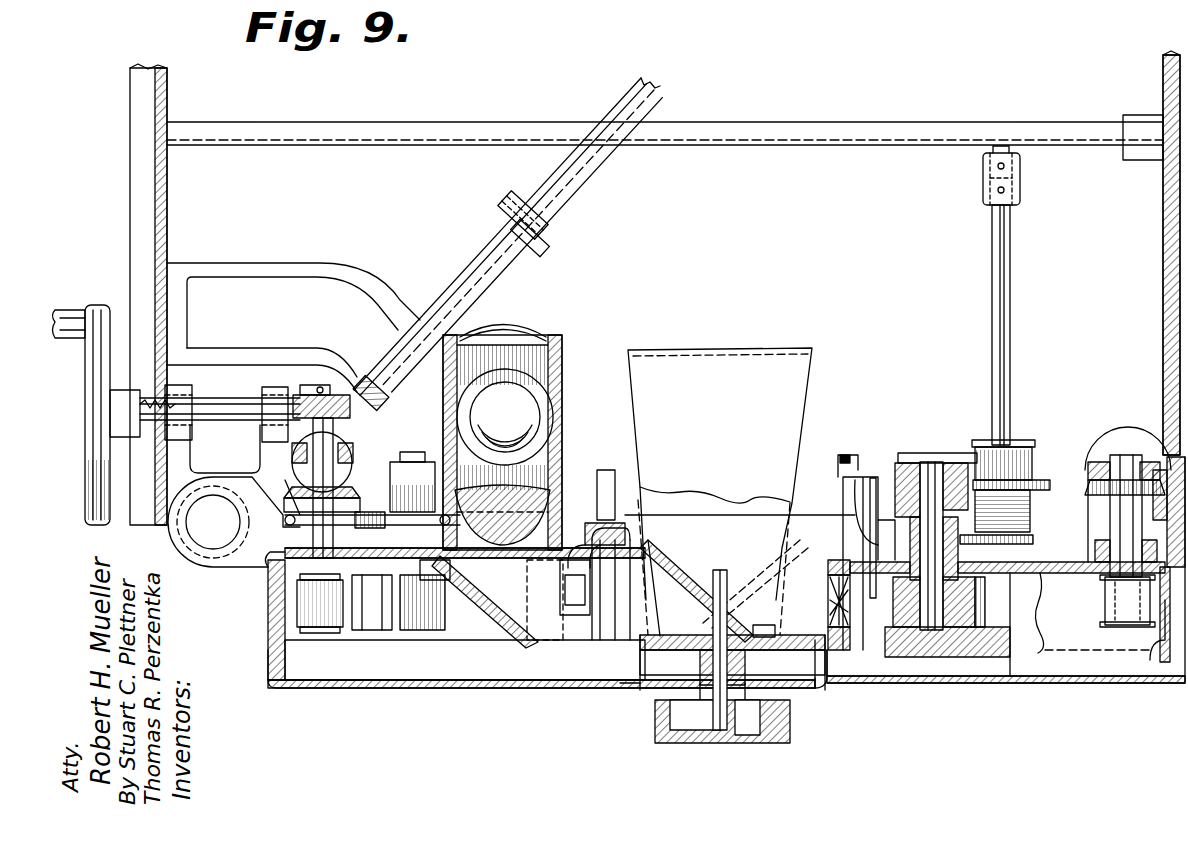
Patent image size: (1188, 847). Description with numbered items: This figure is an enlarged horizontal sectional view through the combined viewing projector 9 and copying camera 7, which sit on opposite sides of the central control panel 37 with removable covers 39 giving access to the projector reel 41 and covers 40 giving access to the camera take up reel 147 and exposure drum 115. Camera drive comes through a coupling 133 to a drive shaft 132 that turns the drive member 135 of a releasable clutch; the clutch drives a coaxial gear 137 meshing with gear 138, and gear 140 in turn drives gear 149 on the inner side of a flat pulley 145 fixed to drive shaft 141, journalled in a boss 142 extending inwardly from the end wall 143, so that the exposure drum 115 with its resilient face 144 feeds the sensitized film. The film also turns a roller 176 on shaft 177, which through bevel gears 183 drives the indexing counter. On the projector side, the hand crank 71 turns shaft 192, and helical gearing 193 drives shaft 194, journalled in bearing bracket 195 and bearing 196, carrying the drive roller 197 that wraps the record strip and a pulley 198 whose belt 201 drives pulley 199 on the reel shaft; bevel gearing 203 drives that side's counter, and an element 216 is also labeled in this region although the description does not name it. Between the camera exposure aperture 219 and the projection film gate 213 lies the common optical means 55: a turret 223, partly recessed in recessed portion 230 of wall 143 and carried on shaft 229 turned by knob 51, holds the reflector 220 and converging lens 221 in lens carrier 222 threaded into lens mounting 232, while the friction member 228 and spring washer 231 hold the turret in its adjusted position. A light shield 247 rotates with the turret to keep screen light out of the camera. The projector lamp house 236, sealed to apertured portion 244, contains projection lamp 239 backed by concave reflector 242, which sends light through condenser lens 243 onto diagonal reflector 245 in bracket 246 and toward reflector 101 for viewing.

The camera 7 is at (1033, 658).
The projector 9 is at (335, 642).
The central control panel 37 is at (820, 690).
The removable end plates or covers 39 is at (388, 688).
The removable end plates or covers 40 is at (1043, 690).
The reel 41 is at (468, 640).
The knob 51 is at (782, 745).
The common optical means 55 is at (762, 598).
The hand crank 71 is at (85, 305).
The reflector 101 is at (575, 200).
The exposure drum 115 is at (952, 657).
The drive shaft 132 is at (1010, 270).
The coupling 133 is at (1020, 195).
The drive member 135 is at (1032, 458).
The coaxial gear 137 is at (1033, 541).
The gear 138 is at (975, 566).
The gear 140 is at (1030, 506).
The drive shaft 141 is at (928, 470).
The boss 142 is at (868, 530).
The end wall 143 is at (1078, 560).
The resilient face 144 is at (975, 618).
The flat pulley 145 is at (950, 463).
The take up reel 147 is at (1005, 450).
The gear 149 is at (890, 478).
The roller 176 is at (1102, 605).
The shaft 177 is at (1100, 535).
The bevel gears 183 is at (1118, 455).
The shaft 192 is at (240, 408).
The helical gearing 193 is at (342, 410).
The shaft 194 is at (340, 468).
The bearing bracket 195 is at (333, 442).
The bearing 196 is at (282, 575).
The drive roller 197 is at (300, 612).
The pulley 198 is at (305, 520).
The pulley 199 is at (395, 512).
The belt 201 is at (282, 508).
The bevel gearing 203 is at (292, 478).
The projection apertured film gate 213 is at (568, 650).
The spool 216 is at (386, 632).
The exposure aperture 219 is at (870, 655).
The reflector 220 is at (688, 580).
The converging lens 221 is at (812, 560).
The lens carrier 222 is at (835, 555).
The turret 223 is at (672, 650).
The annular friction member 228 is at (660, 674).
The shaft 229 is at (718, 733).
The recessed portion 230 is at (632, 643).
The spring washer 231 is at (668, 703).
The lens mounting 232 is at (845, 655).
The lamp house 236 is at (563, 362).
The incandescent projection lamp 239 is at (513, 402).
The concave reflector 242 is at (503, 328).
The condenser lens 243 is at (530, 490).
The apertured portion 244 is at (588, 547).
The diagonal reflector 245 is at (512, 618).
The bracket 246 is at (538, 645).
The light shield 247 is at (795, 380).